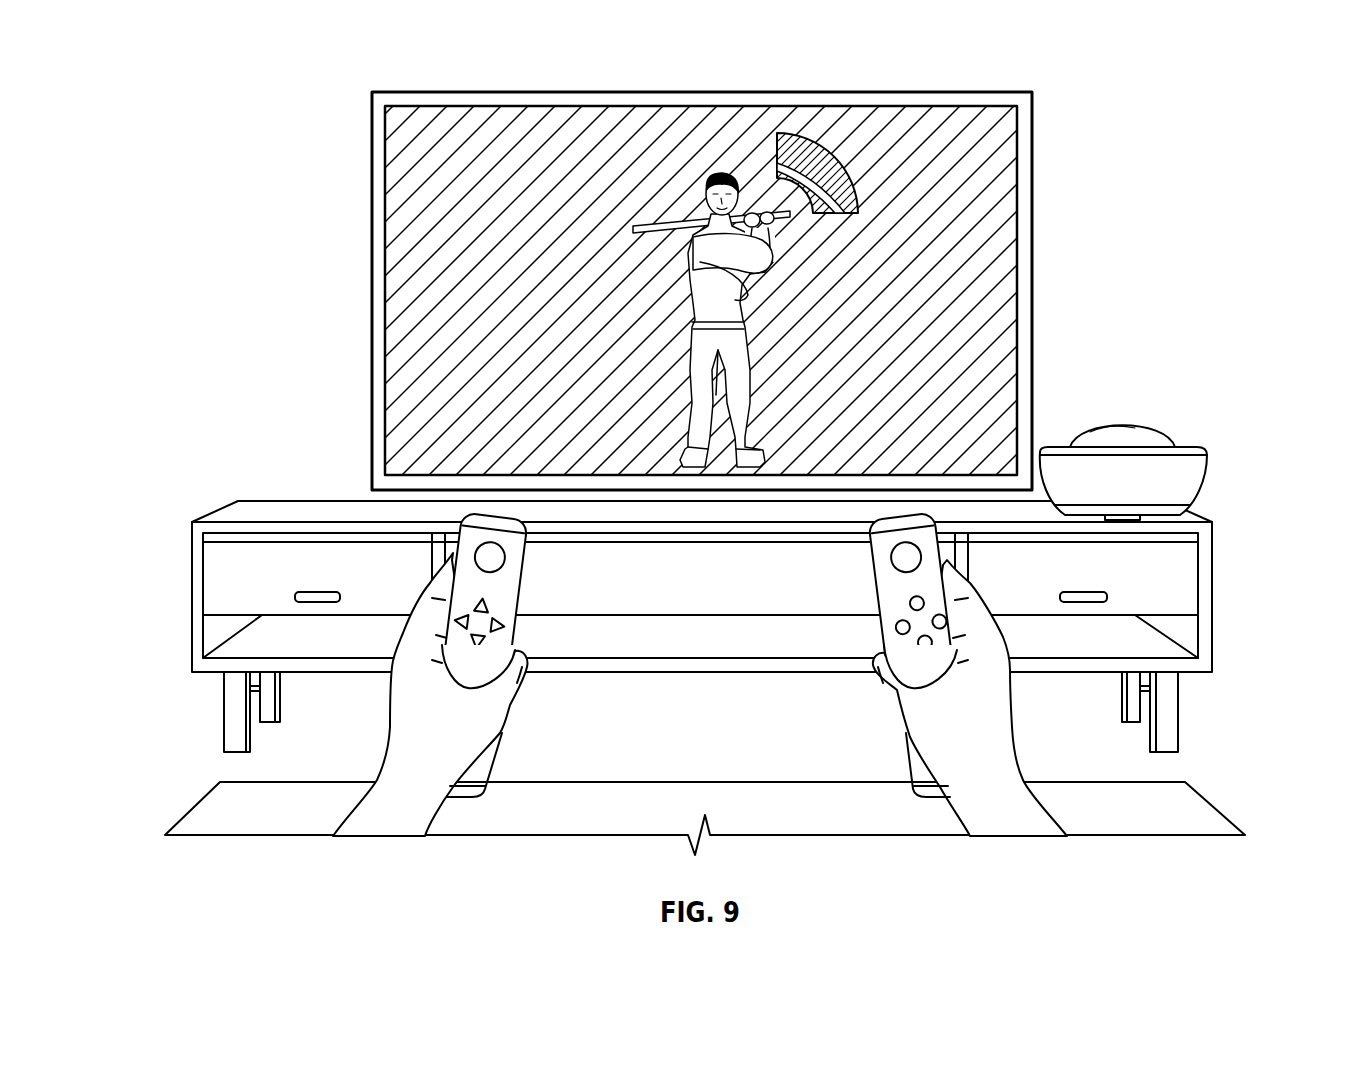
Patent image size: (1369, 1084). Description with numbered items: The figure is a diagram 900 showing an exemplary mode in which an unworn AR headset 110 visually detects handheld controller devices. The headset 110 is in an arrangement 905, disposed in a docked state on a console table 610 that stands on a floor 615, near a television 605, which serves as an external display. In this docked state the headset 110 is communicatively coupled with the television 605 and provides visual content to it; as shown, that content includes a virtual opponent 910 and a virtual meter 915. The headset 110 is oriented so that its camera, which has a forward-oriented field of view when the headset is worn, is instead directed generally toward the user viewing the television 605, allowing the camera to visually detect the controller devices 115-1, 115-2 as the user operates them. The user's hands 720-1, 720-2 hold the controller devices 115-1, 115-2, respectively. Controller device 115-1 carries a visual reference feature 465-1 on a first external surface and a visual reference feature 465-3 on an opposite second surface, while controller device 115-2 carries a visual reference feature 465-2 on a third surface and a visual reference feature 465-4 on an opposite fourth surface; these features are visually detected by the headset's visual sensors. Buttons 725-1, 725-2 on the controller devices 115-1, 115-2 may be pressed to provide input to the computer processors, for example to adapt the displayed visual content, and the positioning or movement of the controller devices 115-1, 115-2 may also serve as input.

The diagram 900 is at (145, 101).
The television 605 is at (1032, 297).
The virtual meter 915 is at (828, 160).
The virtual opponent 910 is at (683, 362).
The console table 610 is at (190, 595).
The arrangement 905 is at (1202, 398).
The headset 110 is at (1123, 425).
The floor 615 is at (195, 815).
The hand 720-1 is at (392, 720).
The hand 720-2 is at (1013, 720).
The controller device 115-1 is at (457, 555).
The controller device 115-2 is at (945, 555).
The visual reference feature 465-1 is at (490, 557).
The visual reference feature 465-2 is at (906, 557).
The visual reference feature 465-3 is at (494, 530).
The visual reference feature 465-4 is at (903, 530).
The buttons 725-1 is at (480, 623).
The buttons 725-2 is at (920, 623).